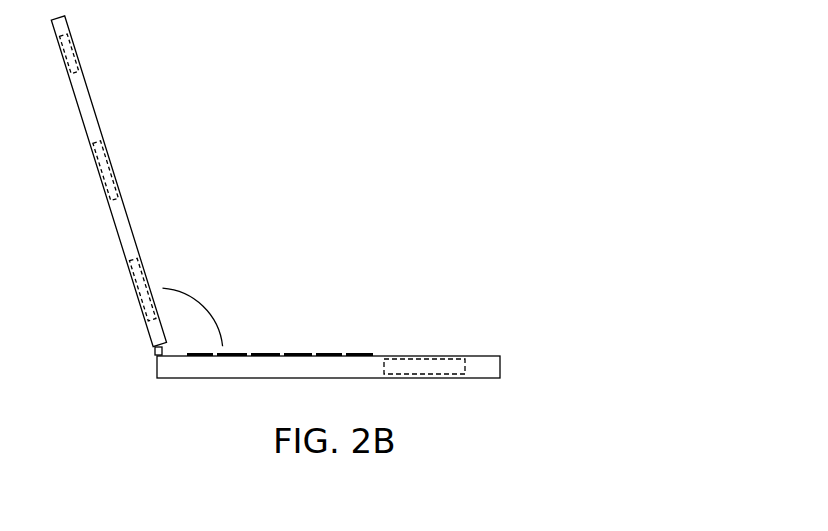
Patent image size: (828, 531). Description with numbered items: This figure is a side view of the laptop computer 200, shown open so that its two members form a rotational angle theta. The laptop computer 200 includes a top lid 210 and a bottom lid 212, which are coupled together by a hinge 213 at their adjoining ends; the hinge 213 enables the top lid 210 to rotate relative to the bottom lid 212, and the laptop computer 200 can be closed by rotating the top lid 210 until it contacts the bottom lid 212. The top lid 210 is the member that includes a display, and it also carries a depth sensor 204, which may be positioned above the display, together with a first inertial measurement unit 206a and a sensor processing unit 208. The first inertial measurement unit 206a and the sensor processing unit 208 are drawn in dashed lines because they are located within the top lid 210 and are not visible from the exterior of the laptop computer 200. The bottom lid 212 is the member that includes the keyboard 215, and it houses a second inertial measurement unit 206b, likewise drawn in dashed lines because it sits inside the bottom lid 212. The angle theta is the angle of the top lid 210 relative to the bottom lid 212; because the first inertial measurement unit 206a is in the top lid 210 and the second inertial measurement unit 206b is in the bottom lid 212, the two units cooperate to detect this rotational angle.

The laptop computer 200 is at (412, 90).
The depth sensor 204 is at (78, 50).
The first inertial measurement unit 206a is at (110, 170).
The second inertial measurement unit 206b is at (420, 358).
The sensor processing unit 208 is at (137, 293).
The top lid 210 is at (77, 108).
The bottom lid 212 is at (247, 378).
The hinge 213 is at (155, 352).
The keyboard 215 is at (327, 354).